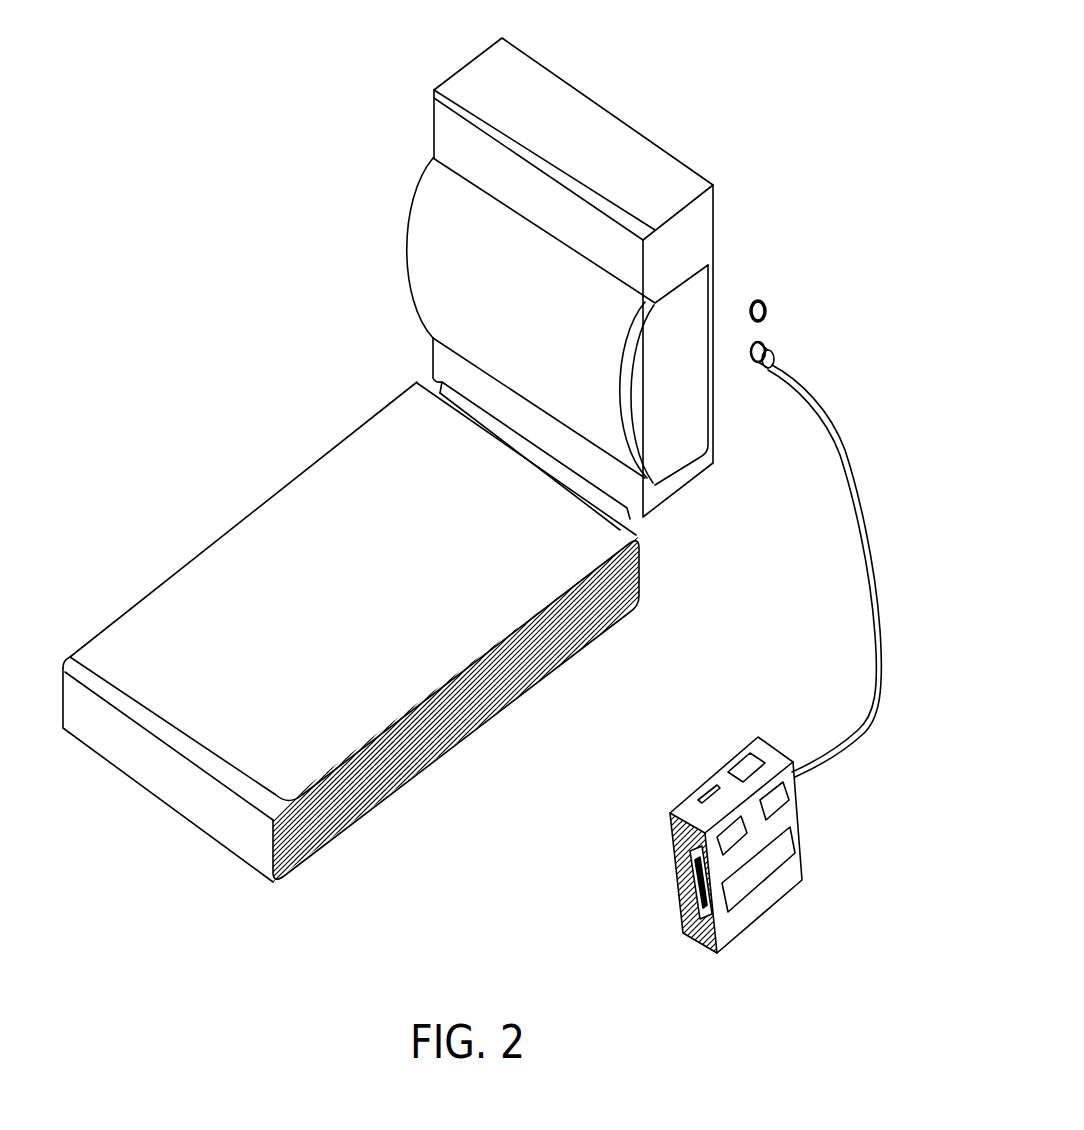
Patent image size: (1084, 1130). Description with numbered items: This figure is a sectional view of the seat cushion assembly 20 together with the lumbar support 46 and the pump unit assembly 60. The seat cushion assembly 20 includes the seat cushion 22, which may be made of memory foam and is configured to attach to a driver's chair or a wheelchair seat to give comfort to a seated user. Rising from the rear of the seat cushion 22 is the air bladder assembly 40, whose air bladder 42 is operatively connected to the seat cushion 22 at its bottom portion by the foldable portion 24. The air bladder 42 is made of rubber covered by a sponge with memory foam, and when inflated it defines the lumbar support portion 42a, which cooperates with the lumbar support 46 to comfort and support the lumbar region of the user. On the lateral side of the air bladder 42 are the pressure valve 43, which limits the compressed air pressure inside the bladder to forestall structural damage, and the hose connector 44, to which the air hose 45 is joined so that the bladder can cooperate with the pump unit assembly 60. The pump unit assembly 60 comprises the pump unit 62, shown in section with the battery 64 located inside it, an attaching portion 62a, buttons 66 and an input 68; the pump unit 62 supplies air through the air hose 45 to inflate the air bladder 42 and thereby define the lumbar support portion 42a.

The seat cushion assembly 20 is at (399, 619).
The seat cushion 22 is at (185, 562).
The foldable portion 24 is at (433, 380).
The air bladder assembly 40 is at (580, 264).
The air bladder 42 is at (551, 337).
The lumbar support portion 42a is at (407, 252).
The pressure valve 43 is at (767, 311).
The hose connector 44 is at (779, 358).
The air hose 45 is at (859, 495).
The lumbar support 46 is at (567, 84).
The pump unit assembly 60 is at (713, 837).
The pump unit 62 is at (708, 848).
The attaching portion 62a is at (669, 816).
The battery 64 is at (697, 893).
The buttons 66 is at (740, 825).
The input 68 is at (705, 797).